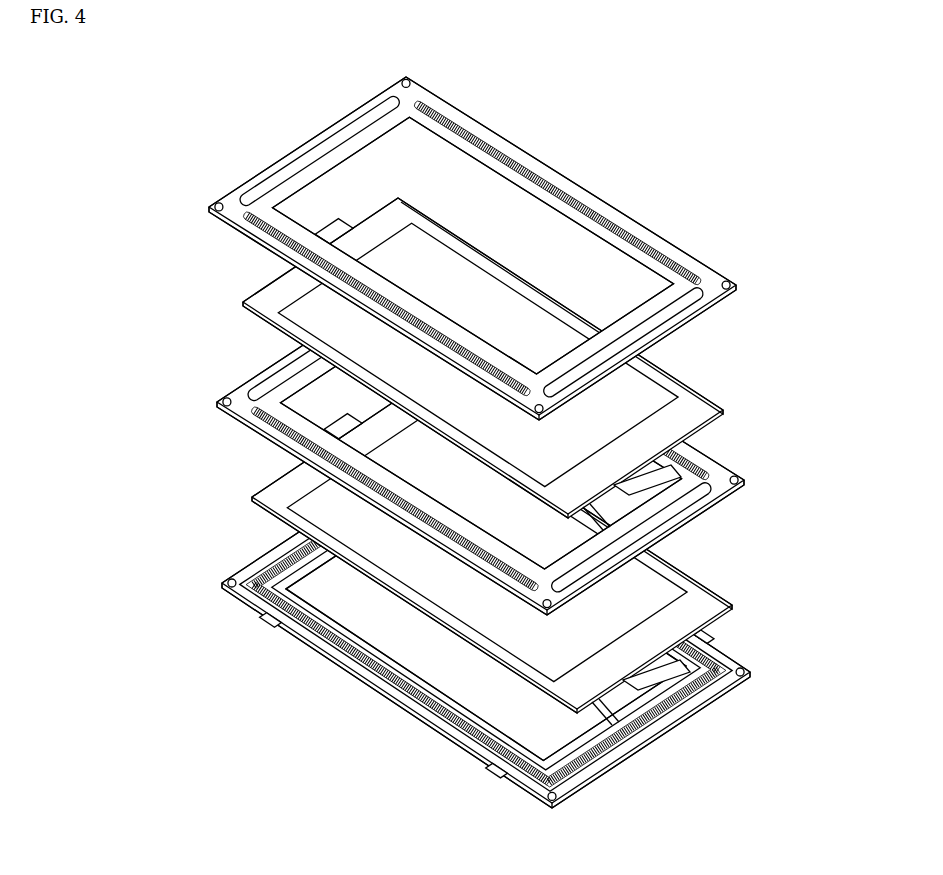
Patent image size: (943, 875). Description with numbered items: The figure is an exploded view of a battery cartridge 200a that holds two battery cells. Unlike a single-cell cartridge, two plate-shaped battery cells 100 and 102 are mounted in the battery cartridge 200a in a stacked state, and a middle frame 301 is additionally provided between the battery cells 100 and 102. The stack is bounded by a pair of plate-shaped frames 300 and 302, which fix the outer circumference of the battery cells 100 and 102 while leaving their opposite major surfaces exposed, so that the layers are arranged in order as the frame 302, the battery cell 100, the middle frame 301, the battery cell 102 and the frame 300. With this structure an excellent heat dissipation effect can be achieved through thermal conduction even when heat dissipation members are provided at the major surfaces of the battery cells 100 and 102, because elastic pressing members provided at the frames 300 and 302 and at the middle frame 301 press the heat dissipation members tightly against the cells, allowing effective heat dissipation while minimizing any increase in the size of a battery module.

The battery cartridge 200a is at (98, 163).
The plate-shaped battery cell 100 is at (715, 393).
The plate-shaped battery cell 102 is at (717, 574).
The plate-shaped frame 300 is at (300, 645).
The middle frame 301 is at (228, 401).
The plate-shaped frame 302 is at (253, 249).